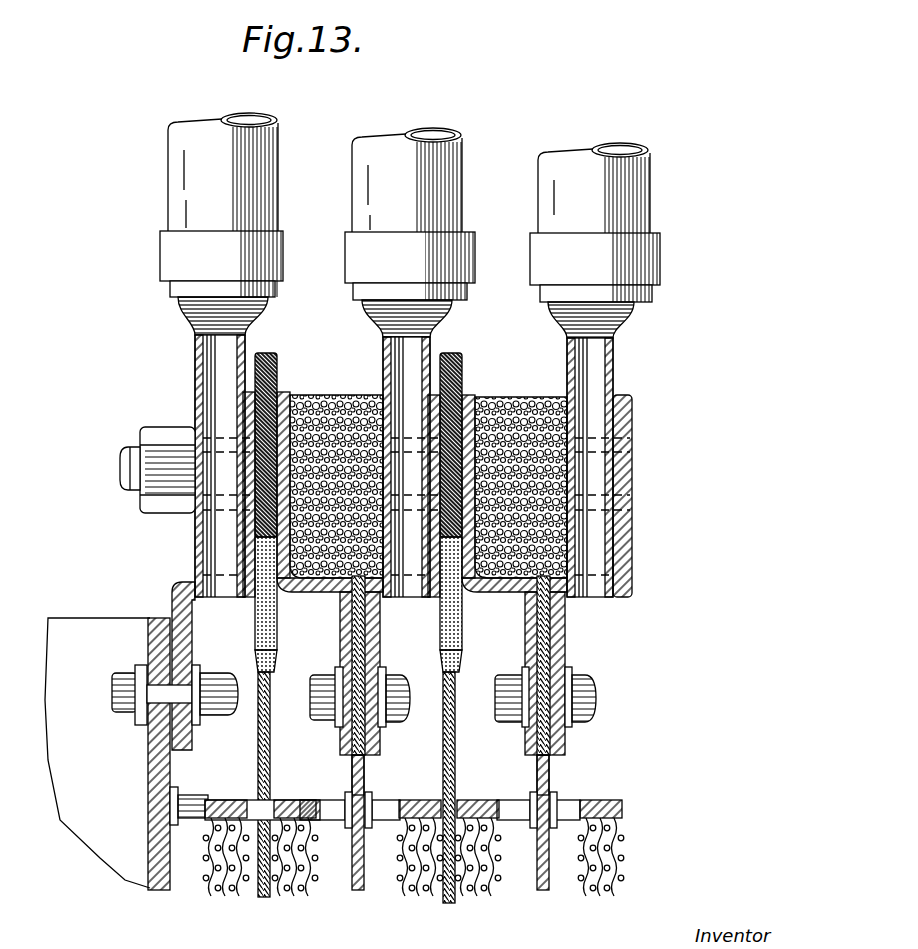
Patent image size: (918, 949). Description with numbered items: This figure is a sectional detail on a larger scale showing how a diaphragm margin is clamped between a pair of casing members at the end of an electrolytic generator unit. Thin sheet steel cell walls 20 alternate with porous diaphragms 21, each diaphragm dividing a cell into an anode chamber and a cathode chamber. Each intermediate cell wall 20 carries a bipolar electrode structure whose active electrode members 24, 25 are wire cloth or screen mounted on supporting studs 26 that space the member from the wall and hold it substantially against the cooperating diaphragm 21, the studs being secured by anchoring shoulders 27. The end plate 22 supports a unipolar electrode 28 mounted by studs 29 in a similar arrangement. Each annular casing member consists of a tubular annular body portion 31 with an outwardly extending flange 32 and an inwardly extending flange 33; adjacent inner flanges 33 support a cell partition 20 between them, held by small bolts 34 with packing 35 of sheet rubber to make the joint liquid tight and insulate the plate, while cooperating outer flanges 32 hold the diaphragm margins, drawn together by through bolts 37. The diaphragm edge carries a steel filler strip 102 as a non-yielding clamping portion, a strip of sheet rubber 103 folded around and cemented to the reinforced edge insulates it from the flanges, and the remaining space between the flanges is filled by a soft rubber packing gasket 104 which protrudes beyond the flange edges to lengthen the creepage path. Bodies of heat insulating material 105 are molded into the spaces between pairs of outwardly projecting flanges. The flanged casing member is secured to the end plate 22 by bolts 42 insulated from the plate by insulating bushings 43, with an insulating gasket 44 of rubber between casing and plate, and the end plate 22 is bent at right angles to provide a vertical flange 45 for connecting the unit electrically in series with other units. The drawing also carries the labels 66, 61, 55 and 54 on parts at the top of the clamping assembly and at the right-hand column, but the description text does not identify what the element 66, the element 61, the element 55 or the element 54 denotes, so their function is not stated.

The cap cylinder 66 is at (180, 173).
The tube 61 is at (215, 367).
The packing gasket 104 is at (265, 353).
The outwardly extending flange 32 is at (284, 391).
The annular body portion 31 is at (305, 586).
The inwardly extending flange 33 is at (345, 633).
The heat insulating material 105 is at (354, 397).
The stud 55 is at (451, 665).
The strip of sheet rubber 103 is at (255, 630).
The steel filler strip 102 is at (472, 625).
The porous diaphragm 21 is at (257, 752).
The through bolt 37 is at (122, 467).
The insulating gasket 44 is at (180, 597).
The vertical flange 45 is at (84, 628).
The end plate 22 is at (155, 872).
The bolt 42 is at (120, 690).
The insulating bushing 43 is at (135, 725).
The bolt 34 is at (322, 722).
The nut 54 is at (598, 700).
The cell wall 20 is at (363, 886).
The packing 35 is at (364, 760).
The stud 29 is at (170, 806).
The anchoring shoulder 27 is at (343, 800).
The supporting stud 26 is at (374, 803).
The unipolar electrode 28 is at (209, 890).
The active electrode member 24 is at (306, 886).
The active electrode member 25 is at (625, 857).